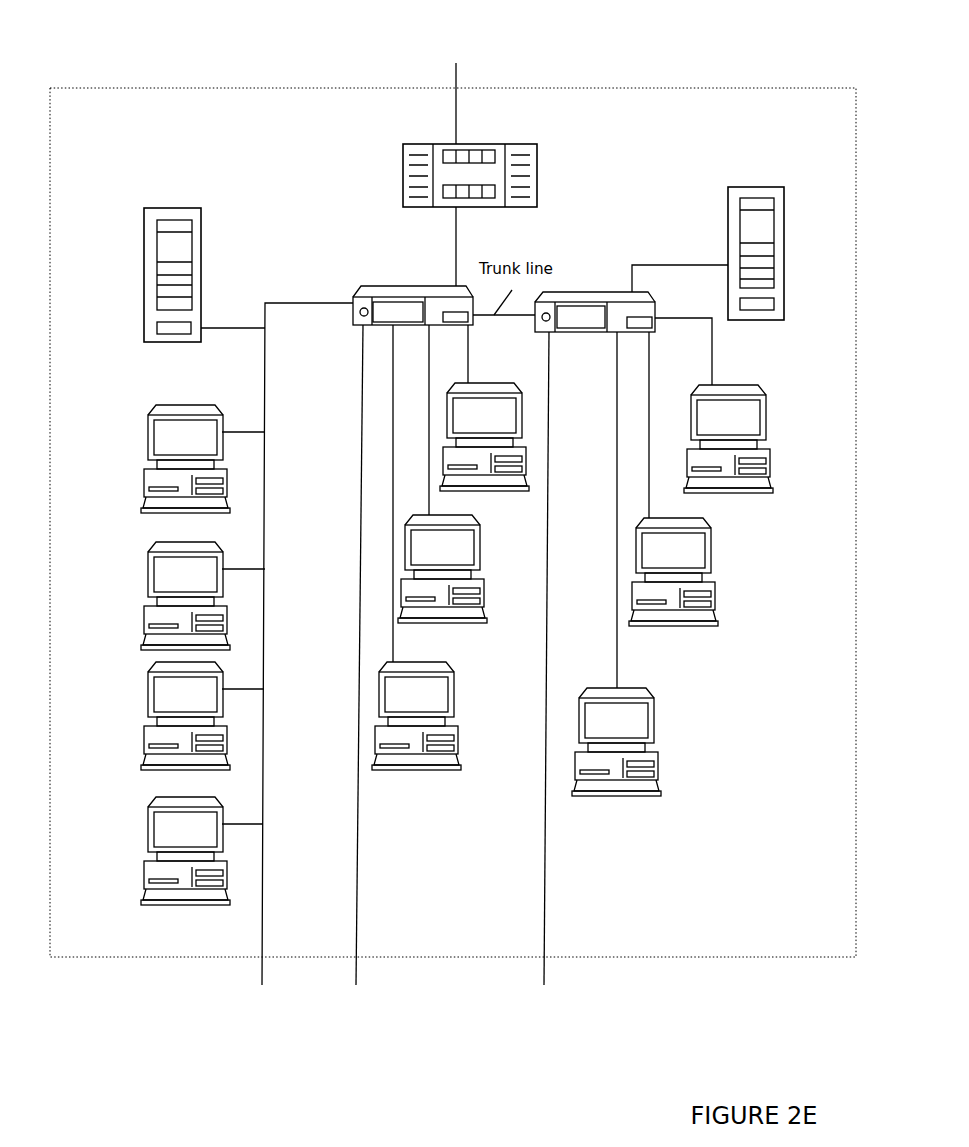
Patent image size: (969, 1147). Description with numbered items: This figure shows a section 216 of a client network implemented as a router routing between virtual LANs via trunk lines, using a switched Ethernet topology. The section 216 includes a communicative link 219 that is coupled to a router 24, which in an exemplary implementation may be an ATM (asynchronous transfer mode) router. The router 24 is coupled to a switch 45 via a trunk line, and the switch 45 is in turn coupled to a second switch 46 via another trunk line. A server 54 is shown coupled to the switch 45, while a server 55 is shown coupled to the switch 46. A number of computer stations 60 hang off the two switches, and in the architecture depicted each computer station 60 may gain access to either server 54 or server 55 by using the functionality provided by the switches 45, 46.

The section 216 is at (172, 88).
The communicative link 219 is at (457, 77).
The router 24 is at (470, 175).
The switch 45 is at (413, 305).
The switch 46 is at (595, 312).
The server 54 is at (204, 275).
The server 55 is at (708, 253).
The computer station 60 is at (457, 615).